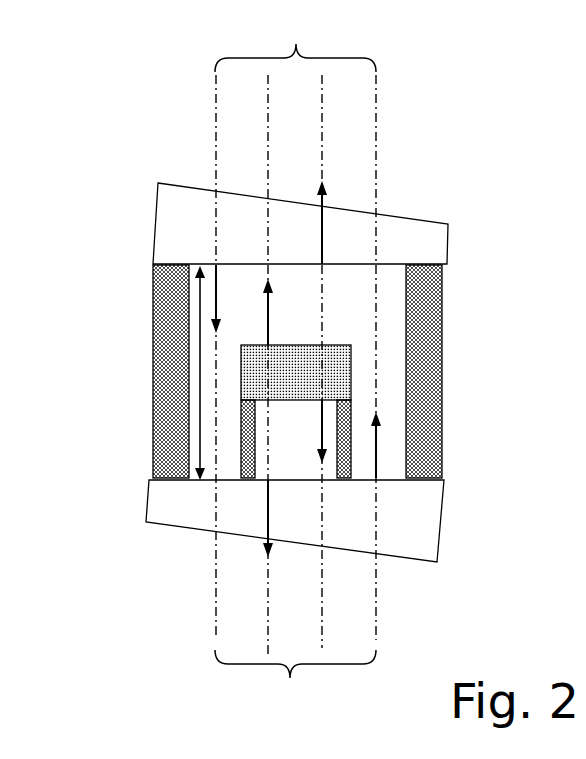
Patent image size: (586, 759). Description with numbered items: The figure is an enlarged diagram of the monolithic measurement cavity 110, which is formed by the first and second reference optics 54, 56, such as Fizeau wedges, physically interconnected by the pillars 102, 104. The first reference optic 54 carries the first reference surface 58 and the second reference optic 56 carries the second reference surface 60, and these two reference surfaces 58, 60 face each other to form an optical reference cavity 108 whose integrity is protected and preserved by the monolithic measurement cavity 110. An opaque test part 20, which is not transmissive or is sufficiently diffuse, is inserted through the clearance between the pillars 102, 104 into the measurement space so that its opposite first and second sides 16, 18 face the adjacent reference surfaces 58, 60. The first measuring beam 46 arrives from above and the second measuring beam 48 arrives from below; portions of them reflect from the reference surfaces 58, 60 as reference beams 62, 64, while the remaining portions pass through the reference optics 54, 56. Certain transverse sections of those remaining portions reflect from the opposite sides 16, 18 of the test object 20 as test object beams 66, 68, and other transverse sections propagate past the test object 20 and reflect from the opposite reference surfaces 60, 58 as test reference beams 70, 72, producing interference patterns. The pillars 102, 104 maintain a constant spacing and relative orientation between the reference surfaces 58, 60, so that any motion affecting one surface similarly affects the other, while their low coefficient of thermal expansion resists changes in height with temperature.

The first side 16 is at (335, 345).
The second side 18 is at (310, 402).
The opaque test part 20 is at (342, 377).
The first measuring beam 46 is at (295, 43).
The second measuring beam 48 is at (295, 680).
The first reference optic 54 is at (168, 226).
The second reference optic 56 is at (420, 516).
The first reference surface 58 is at (388, 266).
The second reference surface 60 is at (308, 478).
The first reference beam 62 is at (341, 217).
The second reference beam 64 is at (263, 518).
The first test object beam 66 is at (270, 316).
The second test object beam 68 is at (322, 418).
The first test reference beam 70 is at (378, 450).
The second test reference beam 72 is at (217, 280).
The pillar 102 is at (148, 338).
The pillar 104 is at (433, 303).
The optical reference cavity 108 is at (200, 370).
The monolithic measurement cavity 110 is at (162, 168).